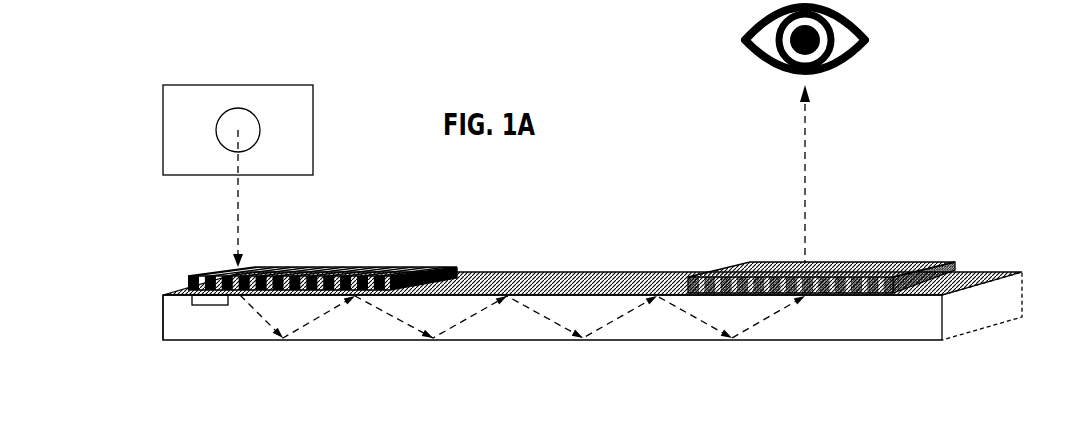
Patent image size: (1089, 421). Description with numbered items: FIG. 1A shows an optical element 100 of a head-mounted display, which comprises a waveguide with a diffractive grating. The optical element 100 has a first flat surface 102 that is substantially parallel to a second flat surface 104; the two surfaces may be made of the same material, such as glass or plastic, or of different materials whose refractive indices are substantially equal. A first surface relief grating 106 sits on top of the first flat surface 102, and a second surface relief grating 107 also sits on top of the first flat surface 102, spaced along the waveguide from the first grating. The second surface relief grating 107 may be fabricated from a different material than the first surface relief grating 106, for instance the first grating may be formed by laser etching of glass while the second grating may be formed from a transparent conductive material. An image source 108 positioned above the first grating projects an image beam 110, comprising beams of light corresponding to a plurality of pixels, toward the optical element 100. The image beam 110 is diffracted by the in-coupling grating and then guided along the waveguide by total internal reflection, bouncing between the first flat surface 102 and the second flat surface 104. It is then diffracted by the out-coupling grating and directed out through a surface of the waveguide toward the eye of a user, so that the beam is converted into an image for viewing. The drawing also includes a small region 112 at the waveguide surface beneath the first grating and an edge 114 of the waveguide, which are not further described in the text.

The optical element 100 is at (585, 232).
The first flat surface 102 is at (1000, 280).
The second flat surface 104 is at (997, 327).
The first surface relief grating 106 is at (298, 253).
The second surface relief grating 107 is at (717, 272).
The image source 108 is at (171, 138).
The image beam 110 is at (238, 218).
The light input region 112 is at (208, 295).
The waveguide edge 114 is at (175, 327).